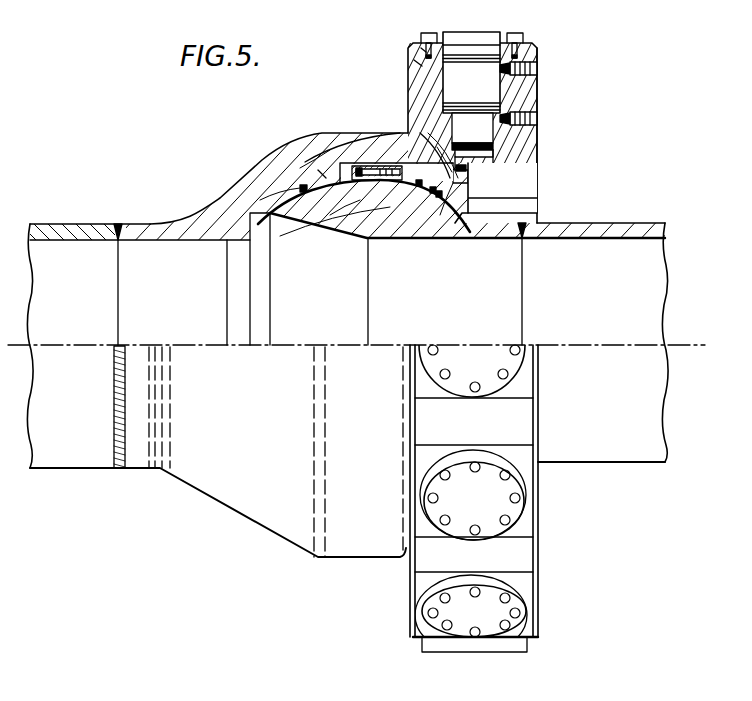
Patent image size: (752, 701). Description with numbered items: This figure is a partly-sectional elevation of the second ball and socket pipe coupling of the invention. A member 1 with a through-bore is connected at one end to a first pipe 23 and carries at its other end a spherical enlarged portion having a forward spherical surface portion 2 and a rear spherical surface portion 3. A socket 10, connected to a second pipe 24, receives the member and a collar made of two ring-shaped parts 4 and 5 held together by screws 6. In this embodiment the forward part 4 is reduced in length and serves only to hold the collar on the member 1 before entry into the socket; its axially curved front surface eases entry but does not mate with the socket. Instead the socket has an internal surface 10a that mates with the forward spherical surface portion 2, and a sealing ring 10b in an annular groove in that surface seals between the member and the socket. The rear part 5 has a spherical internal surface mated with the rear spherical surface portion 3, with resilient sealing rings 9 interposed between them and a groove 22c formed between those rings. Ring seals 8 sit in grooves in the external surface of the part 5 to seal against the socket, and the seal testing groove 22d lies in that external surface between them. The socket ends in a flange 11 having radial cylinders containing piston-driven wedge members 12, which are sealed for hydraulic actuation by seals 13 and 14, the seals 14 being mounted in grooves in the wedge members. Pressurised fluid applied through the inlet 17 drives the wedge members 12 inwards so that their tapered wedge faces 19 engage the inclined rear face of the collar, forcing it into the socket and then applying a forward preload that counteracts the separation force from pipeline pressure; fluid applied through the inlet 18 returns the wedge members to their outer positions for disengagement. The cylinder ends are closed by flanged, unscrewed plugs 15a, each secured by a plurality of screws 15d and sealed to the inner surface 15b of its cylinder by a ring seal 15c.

The member 1 is at (422, 232).
The forward spherical surface portion 2 is at (343, 192).
The rear spherical surface portion 3 is at (447, 206).
The forward ring-shaped part of the collar 4 is at (322, 178).
The rear ring-shaped part of the collar 5 is at (478, 199).
The screws 6 is at (345, 206).
The ring seals 8 is at (340, 170).
The sealing rings 9 is at (361, 182).
The socket 10 is at (208, 205).
The internal surface 10a is at (300, 168).
The sealing ring 10b is at (300, 188).
The flange 11 is at (420, 88).
The wedge members 12 is at (478, 158).
The seal 13 is at (500, 100).
The seals 14 is at (500, 143).
The flanged unscrewed plugs 15a is at (478, 32).
The inner surface of the cylinder 15b is at (418, 64).
The ring seal 15c is at (425, 50).
The screws 15d is at (428, 42).
The inlet 17 is at (537, 70).
The inlet 18 is at (532, 118).
The wedge faces 19 is at (470, 178).
The groove 22c is at (418, 213).
The seal testing groove 22d is at (400, 162).
The first pipe 23 is at (600, 229).
The second pipe 24 is at (70, 226).